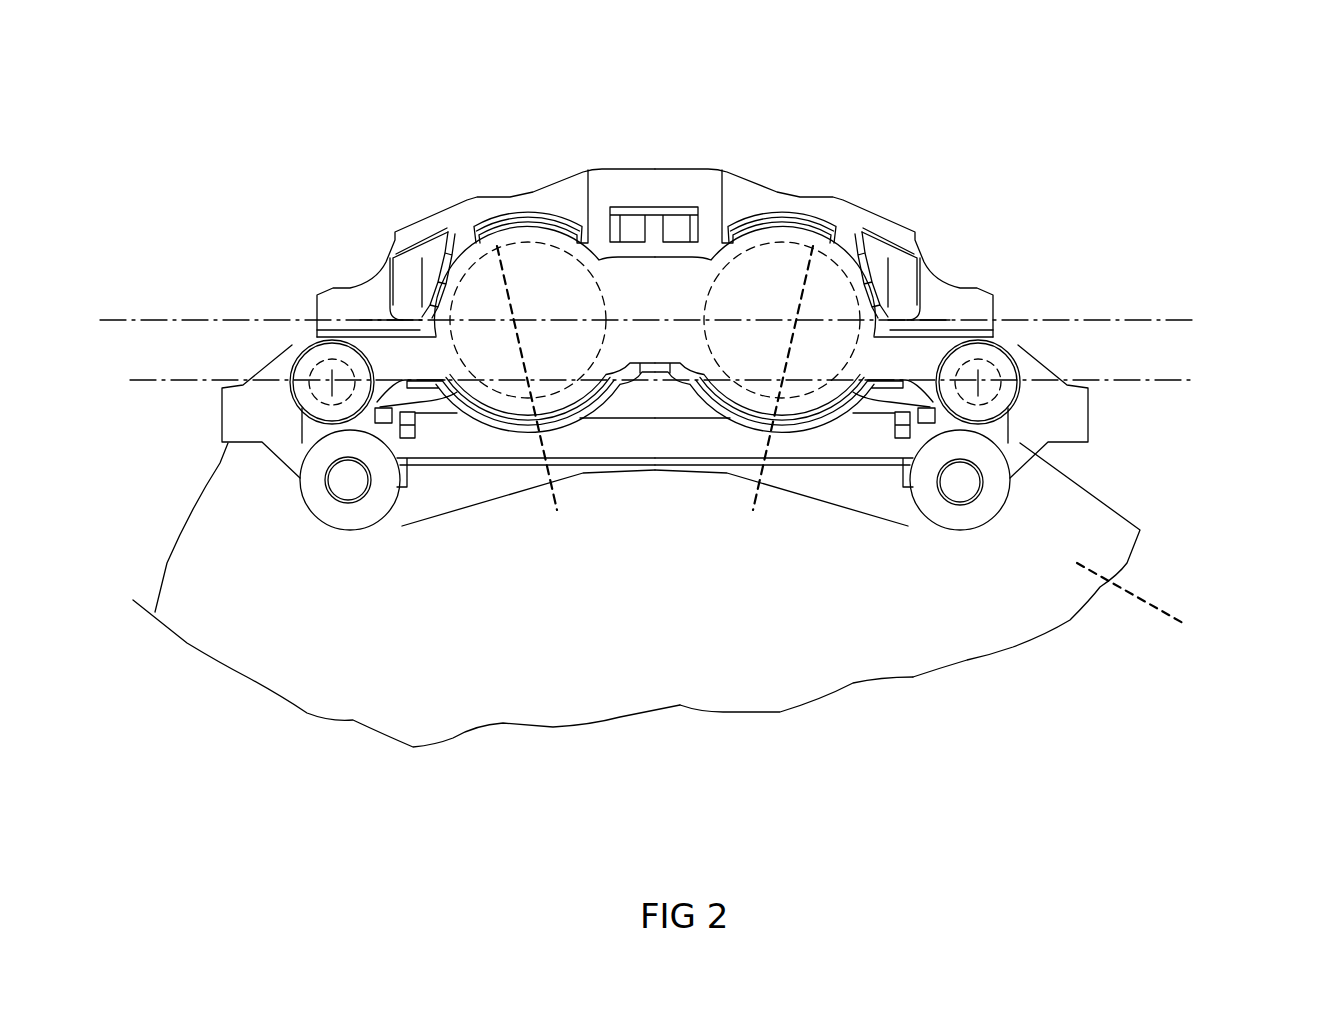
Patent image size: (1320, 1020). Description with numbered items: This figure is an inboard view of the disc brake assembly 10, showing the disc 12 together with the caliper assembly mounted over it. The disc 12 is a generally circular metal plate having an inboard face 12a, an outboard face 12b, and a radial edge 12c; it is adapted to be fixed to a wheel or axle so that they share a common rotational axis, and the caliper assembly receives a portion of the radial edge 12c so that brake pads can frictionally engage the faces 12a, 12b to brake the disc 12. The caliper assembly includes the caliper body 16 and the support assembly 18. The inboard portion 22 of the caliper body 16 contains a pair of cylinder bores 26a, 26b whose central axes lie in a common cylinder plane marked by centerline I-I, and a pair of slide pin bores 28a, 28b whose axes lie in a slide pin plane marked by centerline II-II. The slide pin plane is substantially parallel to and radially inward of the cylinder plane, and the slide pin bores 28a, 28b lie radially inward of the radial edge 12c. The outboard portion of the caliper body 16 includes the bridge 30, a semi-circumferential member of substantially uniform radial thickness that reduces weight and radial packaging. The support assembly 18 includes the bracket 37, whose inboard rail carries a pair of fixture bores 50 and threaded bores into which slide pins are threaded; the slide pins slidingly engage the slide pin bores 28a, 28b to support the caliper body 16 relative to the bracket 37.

The disc brake assembly 10 is at (1232, 106).
The disc 12 is at (1023, 612).
The inboard face 12a is at (854, 652).
The outboard face 12b is at (1158, 605).
The radial edge 12c is at (1120, 514).
The caliper body 16 is at (866, 200).
The support assembly 18 is at (1146, 434).
The inboard portion 22 is at (884, 284).
The cylinder bore 26a is at (528, 392).
The cylinder bore 26b is at (782, 379).
The slide pin bore 28a is at (328, 378).
The slide pin bore 28b is at (982, 385).
The bridge 30 is at (656, 166).
The bracket 37 is at (1076, 410).
The fixture bores 50 is at (346, 492).